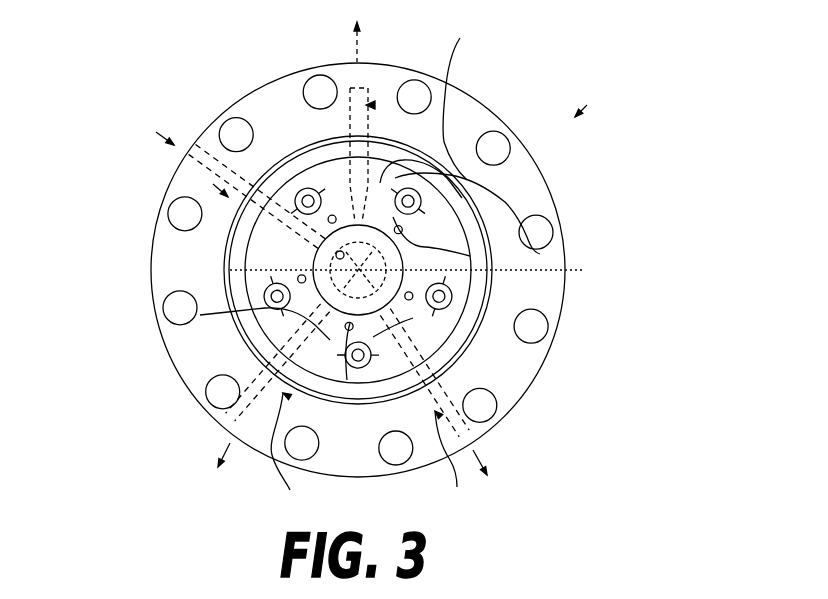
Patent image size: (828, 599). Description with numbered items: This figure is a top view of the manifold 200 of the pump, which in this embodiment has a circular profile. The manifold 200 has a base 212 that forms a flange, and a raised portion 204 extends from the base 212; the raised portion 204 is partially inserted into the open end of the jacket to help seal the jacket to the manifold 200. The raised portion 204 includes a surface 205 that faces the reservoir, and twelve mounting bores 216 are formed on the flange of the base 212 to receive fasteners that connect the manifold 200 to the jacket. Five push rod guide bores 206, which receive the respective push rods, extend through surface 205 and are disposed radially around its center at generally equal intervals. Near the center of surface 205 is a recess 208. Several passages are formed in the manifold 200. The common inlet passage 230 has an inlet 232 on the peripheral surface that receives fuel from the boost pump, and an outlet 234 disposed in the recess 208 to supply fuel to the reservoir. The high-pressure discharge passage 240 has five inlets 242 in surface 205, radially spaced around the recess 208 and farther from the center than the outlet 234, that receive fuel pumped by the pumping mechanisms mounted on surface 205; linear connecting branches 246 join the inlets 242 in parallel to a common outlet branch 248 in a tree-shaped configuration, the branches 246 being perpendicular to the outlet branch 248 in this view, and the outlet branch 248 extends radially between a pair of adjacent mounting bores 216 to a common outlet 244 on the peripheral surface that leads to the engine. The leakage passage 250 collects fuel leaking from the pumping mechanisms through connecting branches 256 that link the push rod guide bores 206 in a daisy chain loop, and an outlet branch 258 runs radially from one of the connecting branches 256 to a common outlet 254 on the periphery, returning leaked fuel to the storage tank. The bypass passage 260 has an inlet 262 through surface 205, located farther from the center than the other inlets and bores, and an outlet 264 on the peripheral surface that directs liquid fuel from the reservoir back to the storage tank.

The manifold 200 is at (587, 105).
The raised portion 204 is at (438, 78).
The surface 205 is at (413, 228).
The push rod guide bores 206 is at (467, 205).
The recess 208 is at (407, 268).
The base 212 is at (560, 172).
The mounting bores 216 is at (318, 74).
The inlet passage 230 is at (162, 200).
The inlet 232 is at (167, 151).
The outlet 234 is at (235, 218).
The discharge passage 240 is at (278, 406).
The inlets 242 is at (306, 190).
The common outlet 244 is at (230, 443).
The connecting branches 246 is at (337, 218).
The common outlet branch 248 is at (300, 407).
The leakage passage 250 is at (370, 105).
The common outlet 254 is at (368, 62).
The connecting branches 256 is at (310, 199).
The outlet branch 258 is at (348, 83).
The bypass passage 260 is at (425, 411).
The inlet 262 is at (431, 412).
The outlet 264 is at (473, 450).